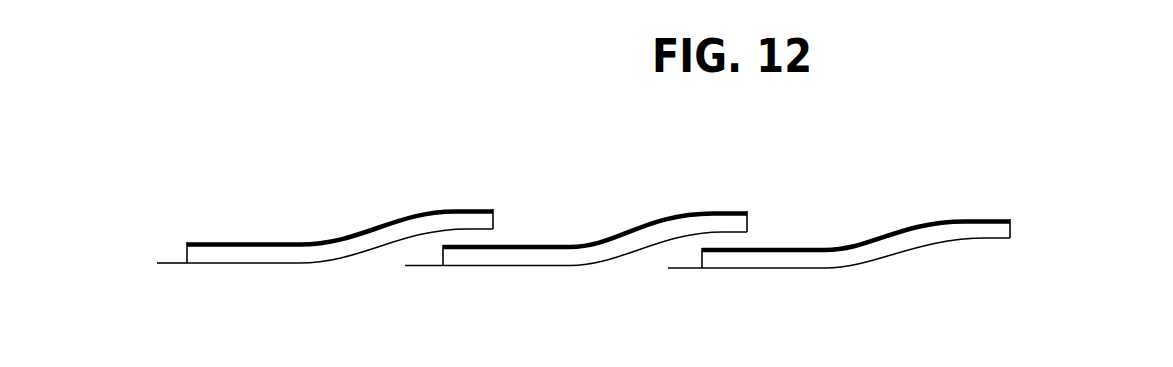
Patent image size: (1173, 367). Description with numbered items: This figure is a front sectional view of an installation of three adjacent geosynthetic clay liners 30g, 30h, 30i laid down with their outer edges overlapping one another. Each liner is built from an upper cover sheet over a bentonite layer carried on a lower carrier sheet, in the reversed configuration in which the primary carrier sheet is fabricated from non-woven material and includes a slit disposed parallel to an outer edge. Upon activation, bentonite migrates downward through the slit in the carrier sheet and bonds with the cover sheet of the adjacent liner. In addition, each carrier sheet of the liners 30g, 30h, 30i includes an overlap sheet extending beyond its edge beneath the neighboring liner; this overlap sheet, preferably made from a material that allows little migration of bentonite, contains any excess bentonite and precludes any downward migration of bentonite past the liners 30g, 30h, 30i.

The geosynthetic clay liner 30i is at (331, 223).
The geosynthetic clay liner 30h is at (579, 224).
The geosynthetic clay liner 30g is at (823, 224).